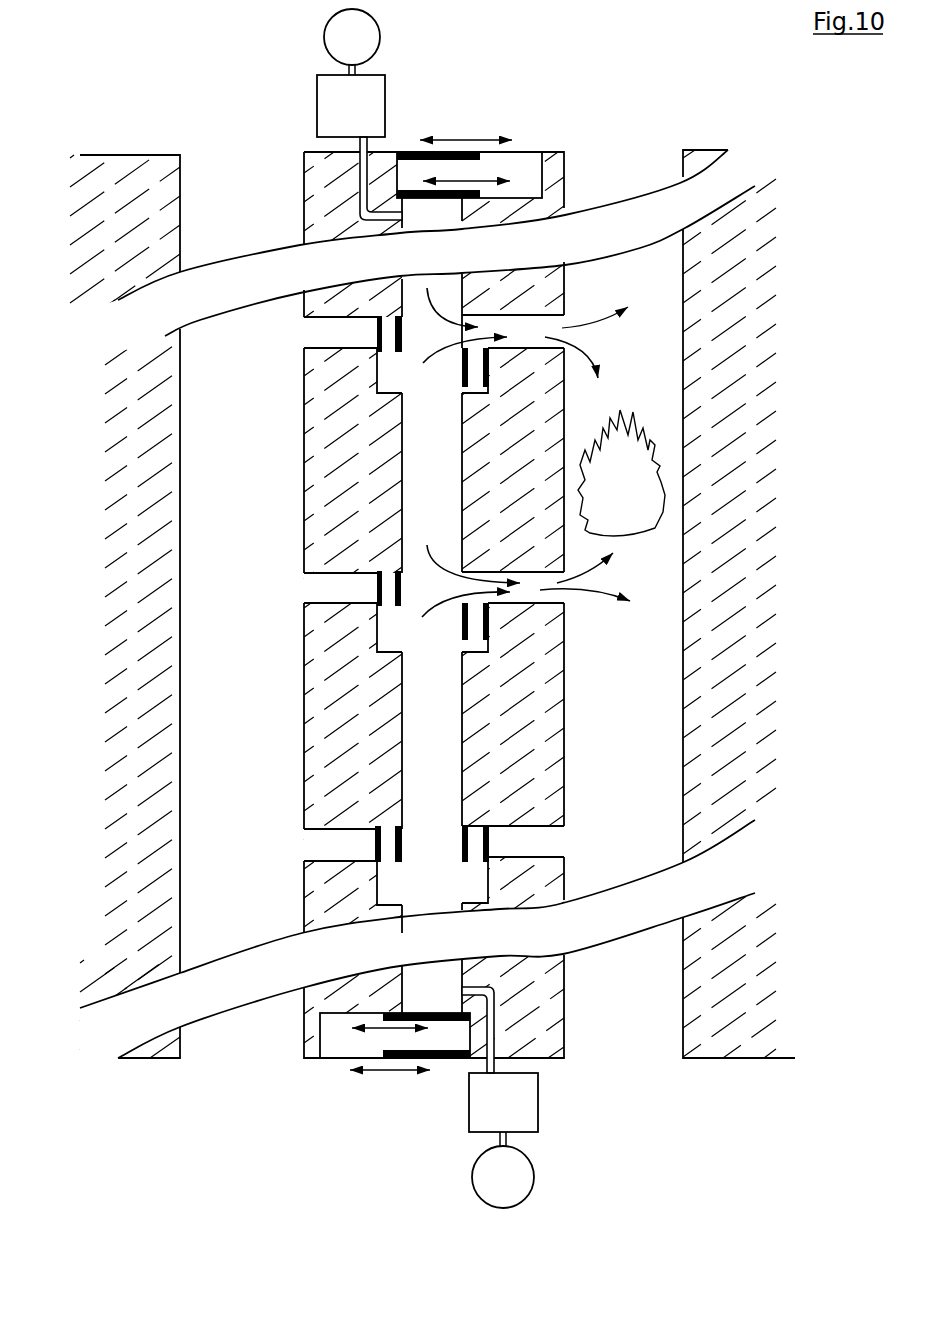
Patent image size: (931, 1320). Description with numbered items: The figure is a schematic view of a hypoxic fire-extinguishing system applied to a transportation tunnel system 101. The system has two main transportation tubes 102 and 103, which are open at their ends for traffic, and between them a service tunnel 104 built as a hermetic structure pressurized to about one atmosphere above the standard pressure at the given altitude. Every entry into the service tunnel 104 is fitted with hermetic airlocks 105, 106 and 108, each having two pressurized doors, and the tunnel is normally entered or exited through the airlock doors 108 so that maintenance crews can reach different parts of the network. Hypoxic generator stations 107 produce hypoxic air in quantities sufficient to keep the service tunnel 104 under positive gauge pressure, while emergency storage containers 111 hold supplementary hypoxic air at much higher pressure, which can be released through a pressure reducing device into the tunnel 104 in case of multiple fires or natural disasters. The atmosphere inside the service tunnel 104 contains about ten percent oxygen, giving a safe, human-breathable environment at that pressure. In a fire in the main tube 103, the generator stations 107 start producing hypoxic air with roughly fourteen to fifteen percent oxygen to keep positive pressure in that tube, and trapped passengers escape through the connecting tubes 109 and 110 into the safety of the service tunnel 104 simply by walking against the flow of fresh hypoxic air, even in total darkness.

The transportation tunnel system 101 is at (153, 52).
The main transportation tube 102 is at (164, 606).
The main transportation tube 103 is at (689, 604).
The service tunnel 104 is at (432, 605).
The hermetic airlock 105 is at (478, 350).
The hermetic airlock 106 is at (475, 612).
The hypoxic generator station 107 is at (427, 605).
The airlock door 108 is at (493, 170).
The connecting tube 109 is at (522, 328).
The connecting tube 110 is at (527, 597).
The emergency storage container 111 is at (429, 608).